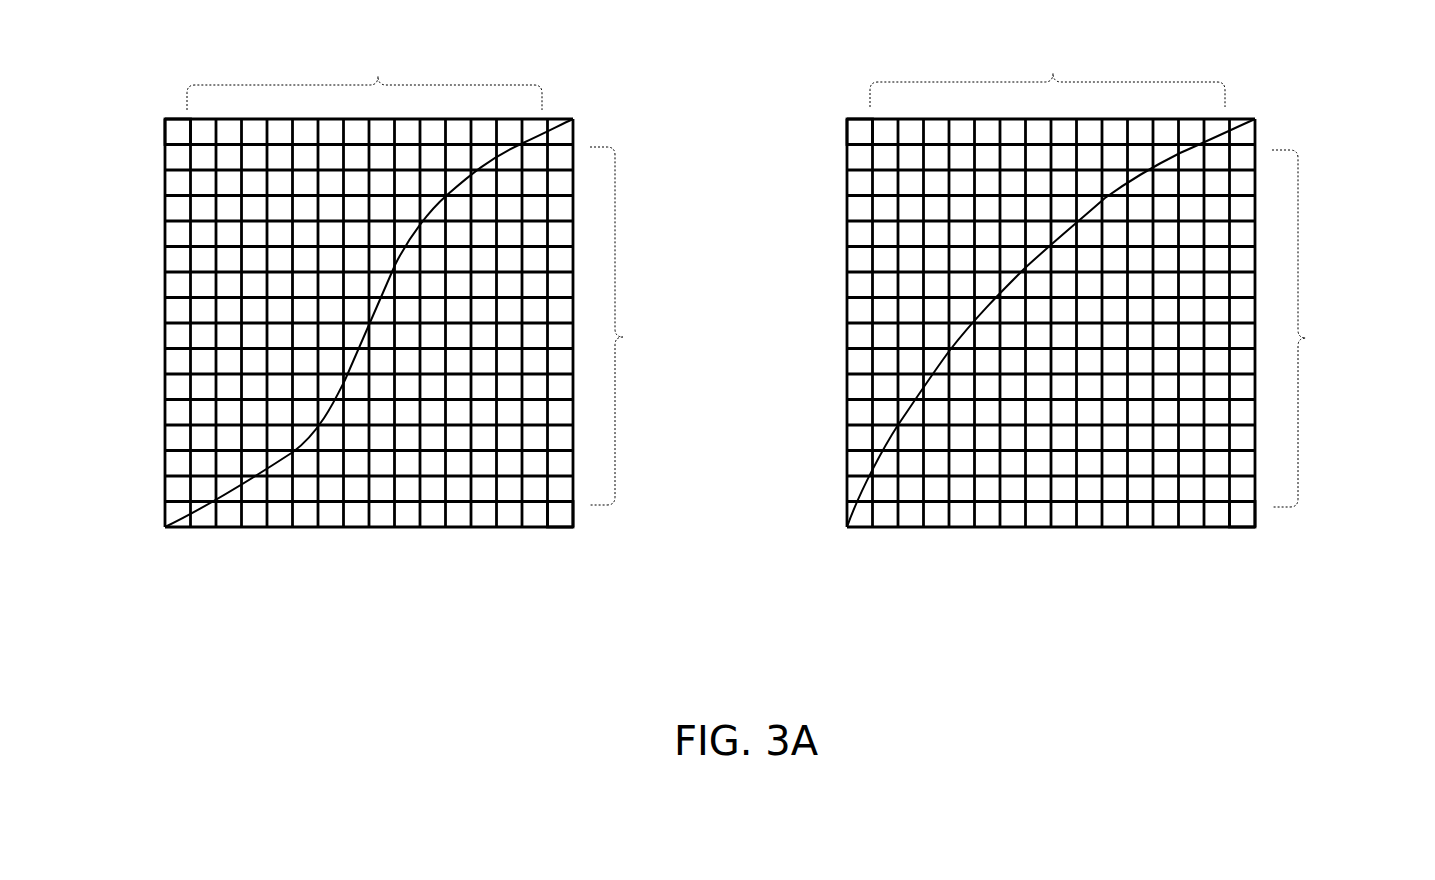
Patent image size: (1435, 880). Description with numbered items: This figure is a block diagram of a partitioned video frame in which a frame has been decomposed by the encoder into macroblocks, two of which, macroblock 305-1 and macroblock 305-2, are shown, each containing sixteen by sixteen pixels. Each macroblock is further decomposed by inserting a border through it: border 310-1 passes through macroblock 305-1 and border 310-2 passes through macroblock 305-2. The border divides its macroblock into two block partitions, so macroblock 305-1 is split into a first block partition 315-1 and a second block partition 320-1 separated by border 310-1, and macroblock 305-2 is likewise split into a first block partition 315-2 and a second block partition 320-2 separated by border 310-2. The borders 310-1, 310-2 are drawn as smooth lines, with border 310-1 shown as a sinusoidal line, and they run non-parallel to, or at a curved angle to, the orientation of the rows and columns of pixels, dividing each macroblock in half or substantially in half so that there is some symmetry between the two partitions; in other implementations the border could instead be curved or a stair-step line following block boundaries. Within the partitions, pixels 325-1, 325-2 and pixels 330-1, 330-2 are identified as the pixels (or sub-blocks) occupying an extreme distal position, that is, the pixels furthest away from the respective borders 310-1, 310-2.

The macroblock 305-1 is at (165, 320).
The macroblock 305-2 is at (850, 320).
The border 310-1 is at (196, 511).
The border 310-2 is at (880, 455).
The first block partition 315-1 is at (400, 65).
The first block partition 315-2 is at (1081, 61).
The second block partition 320-1 is at (700, 402).
The second block partition 320-2 is at (1383, 404).
The pixel 325-1 is at (176, 134).
The pixel 325-2 is at (860, 129).
The pixel 330-1 is at (567, 517).
The pixel 330-2 is at (1243, 512).